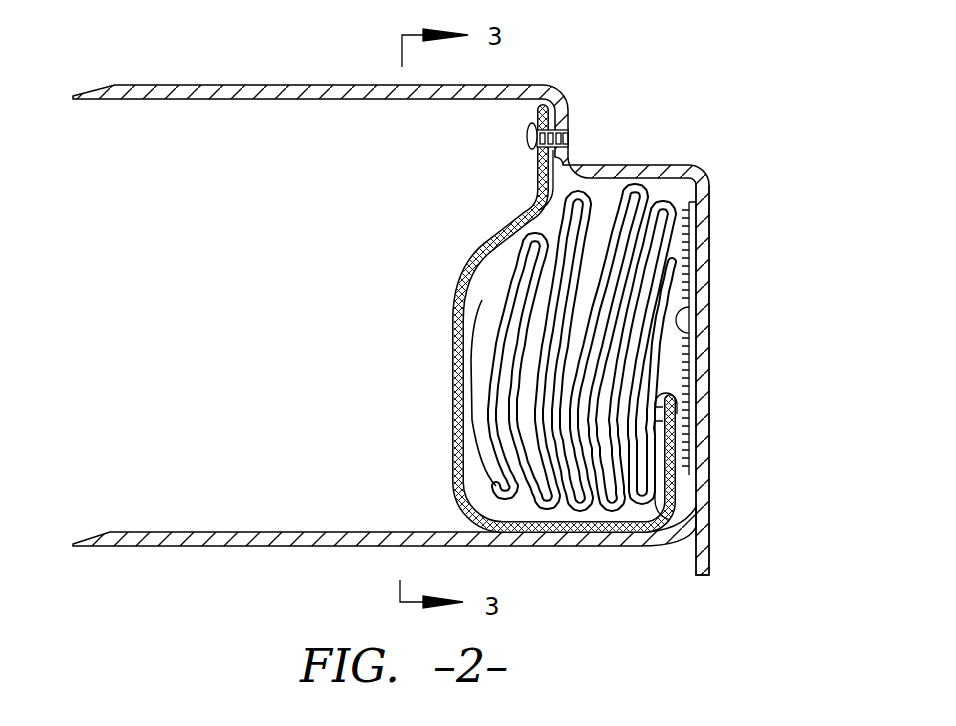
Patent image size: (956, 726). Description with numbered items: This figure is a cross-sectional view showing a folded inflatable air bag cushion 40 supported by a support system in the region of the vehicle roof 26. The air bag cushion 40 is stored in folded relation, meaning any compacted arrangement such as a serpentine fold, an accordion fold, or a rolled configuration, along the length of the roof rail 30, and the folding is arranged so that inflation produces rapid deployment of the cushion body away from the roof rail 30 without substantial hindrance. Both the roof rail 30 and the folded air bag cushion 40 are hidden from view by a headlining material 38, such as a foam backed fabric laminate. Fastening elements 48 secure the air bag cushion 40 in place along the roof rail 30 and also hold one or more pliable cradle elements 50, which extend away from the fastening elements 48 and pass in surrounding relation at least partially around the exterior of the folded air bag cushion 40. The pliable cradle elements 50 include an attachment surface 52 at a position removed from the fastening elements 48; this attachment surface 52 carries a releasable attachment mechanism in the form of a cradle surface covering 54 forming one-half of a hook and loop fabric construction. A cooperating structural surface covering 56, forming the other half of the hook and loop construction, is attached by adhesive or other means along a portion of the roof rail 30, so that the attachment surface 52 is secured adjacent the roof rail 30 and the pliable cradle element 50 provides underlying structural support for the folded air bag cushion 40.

The roof 26 is at (333, 99).
The roof rail 30 is at (710, 258).
The headlining material 38 is at (298, 531).
The inflatable air bag cushion 40 is at (487, 348).
The fastening elements 48 is at (527, 131).
The pliable cradle elements 50 is at (497, 226).
The attachment surface 52 is at (687, 498).
The cradle surface covering 54 is at (668, 386).
The structural surface covering 56 is at (708, 333).